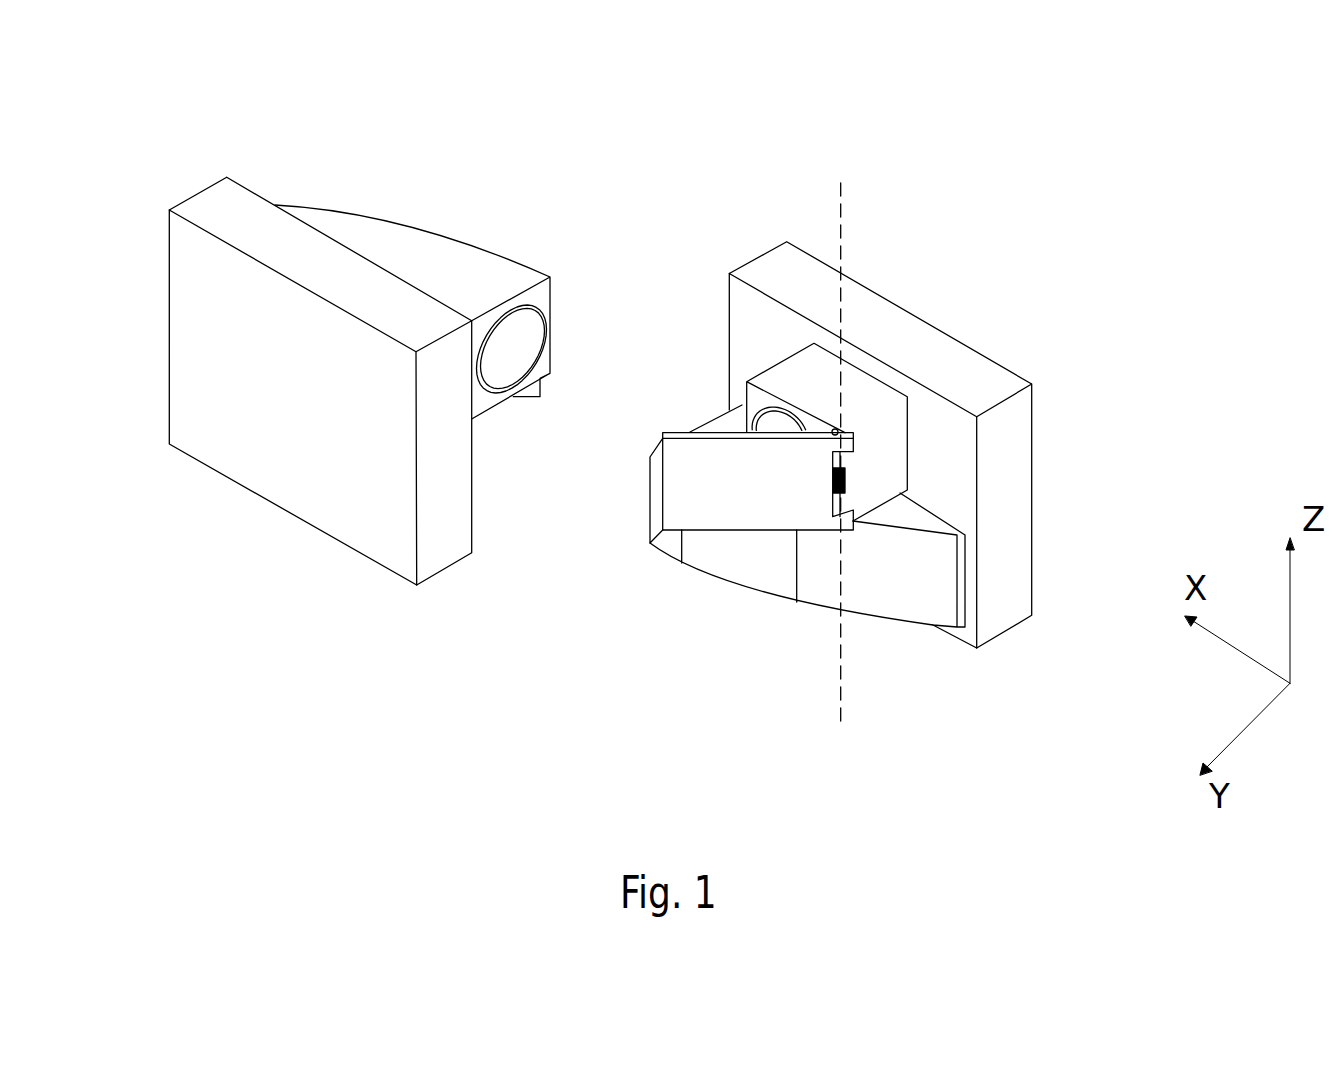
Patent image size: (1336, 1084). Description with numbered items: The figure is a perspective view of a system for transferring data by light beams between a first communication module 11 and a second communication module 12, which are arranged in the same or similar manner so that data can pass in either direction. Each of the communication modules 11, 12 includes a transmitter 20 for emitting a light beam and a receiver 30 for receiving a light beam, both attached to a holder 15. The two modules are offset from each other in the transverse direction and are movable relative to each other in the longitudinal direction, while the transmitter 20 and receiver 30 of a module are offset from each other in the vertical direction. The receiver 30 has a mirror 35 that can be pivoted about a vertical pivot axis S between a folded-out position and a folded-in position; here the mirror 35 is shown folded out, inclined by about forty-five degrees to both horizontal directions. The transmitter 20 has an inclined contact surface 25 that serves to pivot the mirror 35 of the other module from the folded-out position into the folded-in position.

The first communication module 11 is at (790, 280).
The second communication module 12 is at (223, 213).
The holder 15 is at (283, 449).
The transmitter 20 is at (459, 273).
The contact surface 25 is at (815, 568).
The receiver 30 is at (865, 398).
The mirror 35 is at (737, 489).
The pivot axis S is at (842, 220).